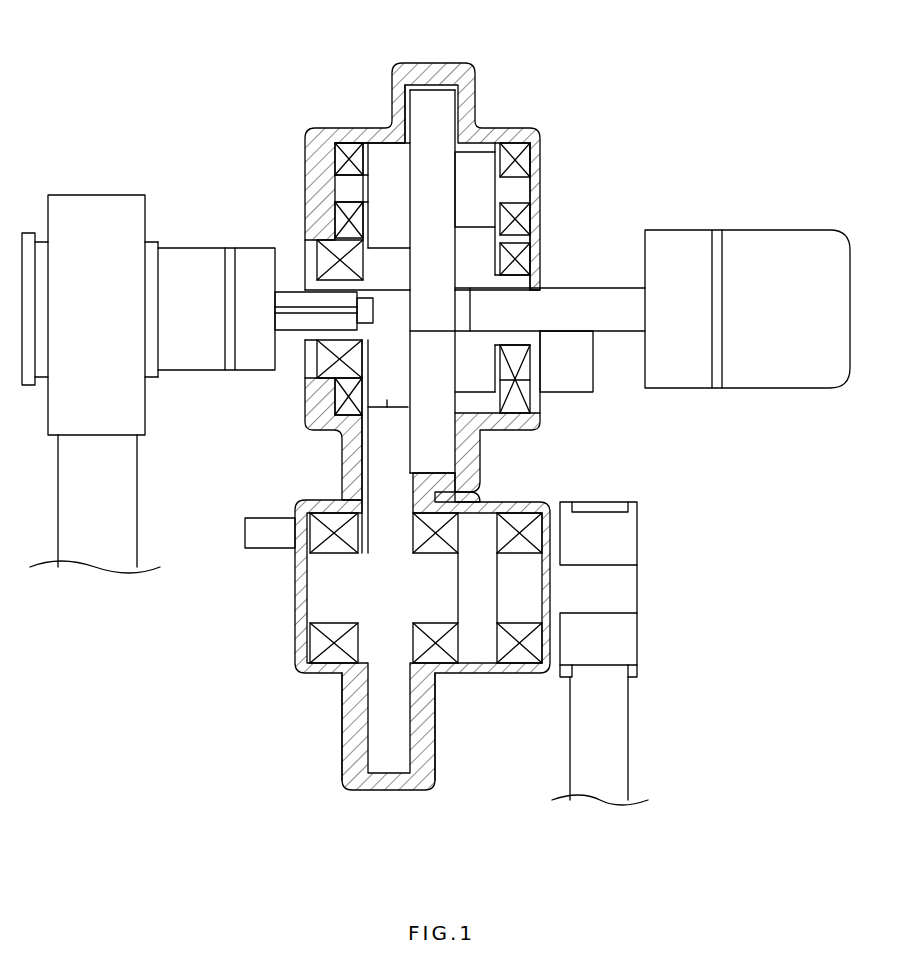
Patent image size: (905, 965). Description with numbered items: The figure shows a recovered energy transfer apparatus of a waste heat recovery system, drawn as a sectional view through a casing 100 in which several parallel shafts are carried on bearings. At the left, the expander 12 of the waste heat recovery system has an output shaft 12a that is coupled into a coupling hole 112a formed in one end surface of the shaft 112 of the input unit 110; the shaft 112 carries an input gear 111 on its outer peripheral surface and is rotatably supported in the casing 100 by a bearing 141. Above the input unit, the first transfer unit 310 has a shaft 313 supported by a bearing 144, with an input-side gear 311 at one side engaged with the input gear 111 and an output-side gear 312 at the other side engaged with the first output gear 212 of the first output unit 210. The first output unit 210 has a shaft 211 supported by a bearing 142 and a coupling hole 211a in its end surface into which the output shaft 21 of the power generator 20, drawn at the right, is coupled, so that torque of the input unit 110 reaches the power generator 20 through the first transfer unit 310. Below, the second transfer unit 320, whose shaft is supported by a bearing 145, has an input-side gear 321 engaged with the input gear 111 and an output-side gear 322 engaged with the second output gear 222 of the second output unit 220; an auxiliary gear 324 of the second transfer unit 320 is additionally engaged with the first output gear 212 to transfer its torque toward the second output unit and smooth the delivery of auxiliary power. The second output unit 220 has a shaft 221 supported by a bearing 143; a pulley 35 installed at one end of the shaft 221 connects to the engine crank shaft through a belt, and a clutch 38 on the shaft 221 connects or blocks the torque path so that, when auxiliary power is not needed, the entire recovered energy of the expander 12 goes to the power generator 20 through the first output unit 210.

The expander 12 is at (95, 203).
The output shaft 12a is at (288, 290).
The power generator 20 is at (770, 238).
The output shaft 21 is at (617, 320).
The pulley 35 is at (630, 550).
The clutch 38 is at (477, 660).
The casing 100 is at (403, 70).
The input unit 110 is at (303, 338).
The input gear 111 is at (430, 286).
The shaft 112 is at (400, 248).
The coupling hole 112a is at (333, 290).
The bearing 141 is at (322, 363).
The bearing 142 is at (532, 238).
The bearing 143 is at (317, 644).
The bearing 144 is at (335, 157).
The bearing 145 is at (335, 400).
The first output unit 210 is at (550, 272).
The shaft 211 is at (535, 262).
The coupling hole 211a is at (525, 292).
The first output gear 212 is at (505, 230).
The second output unit 220 is at (361, 687).
The shaft 221 is at (438, 613).
The second output gear 222 is at (380, 488).
The first transfer unit 310 is at (462, 88).
The input-side gear 311 is at (436, 95).
The output-side gear 312 is at (482, 155).
The shaft 313 is at (520, 197).
The second transfer unit 320 is at (464, 425).
The input-side gear 321 is at (445, 460).
The output-side gear 322 is at (385, 410).
The auxiliary gear 324 is at (522, 352).